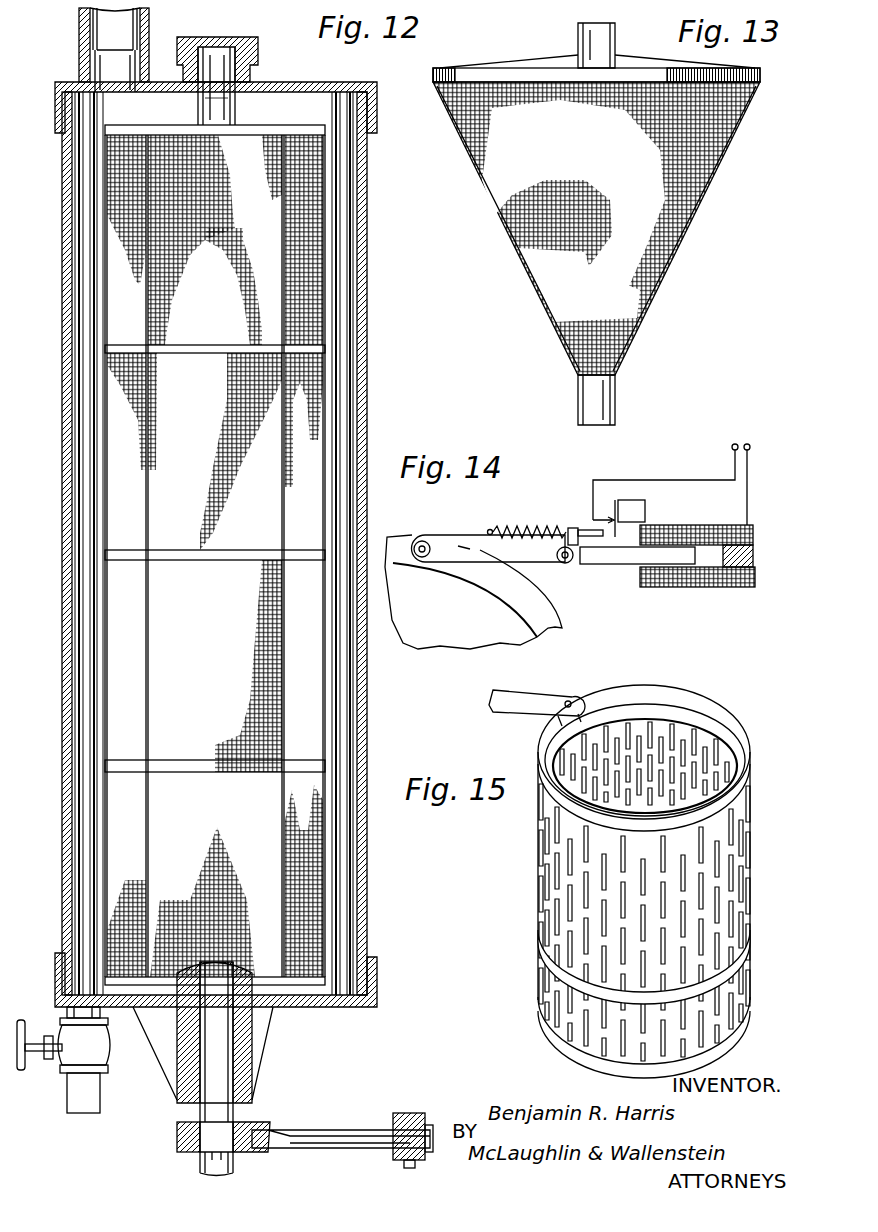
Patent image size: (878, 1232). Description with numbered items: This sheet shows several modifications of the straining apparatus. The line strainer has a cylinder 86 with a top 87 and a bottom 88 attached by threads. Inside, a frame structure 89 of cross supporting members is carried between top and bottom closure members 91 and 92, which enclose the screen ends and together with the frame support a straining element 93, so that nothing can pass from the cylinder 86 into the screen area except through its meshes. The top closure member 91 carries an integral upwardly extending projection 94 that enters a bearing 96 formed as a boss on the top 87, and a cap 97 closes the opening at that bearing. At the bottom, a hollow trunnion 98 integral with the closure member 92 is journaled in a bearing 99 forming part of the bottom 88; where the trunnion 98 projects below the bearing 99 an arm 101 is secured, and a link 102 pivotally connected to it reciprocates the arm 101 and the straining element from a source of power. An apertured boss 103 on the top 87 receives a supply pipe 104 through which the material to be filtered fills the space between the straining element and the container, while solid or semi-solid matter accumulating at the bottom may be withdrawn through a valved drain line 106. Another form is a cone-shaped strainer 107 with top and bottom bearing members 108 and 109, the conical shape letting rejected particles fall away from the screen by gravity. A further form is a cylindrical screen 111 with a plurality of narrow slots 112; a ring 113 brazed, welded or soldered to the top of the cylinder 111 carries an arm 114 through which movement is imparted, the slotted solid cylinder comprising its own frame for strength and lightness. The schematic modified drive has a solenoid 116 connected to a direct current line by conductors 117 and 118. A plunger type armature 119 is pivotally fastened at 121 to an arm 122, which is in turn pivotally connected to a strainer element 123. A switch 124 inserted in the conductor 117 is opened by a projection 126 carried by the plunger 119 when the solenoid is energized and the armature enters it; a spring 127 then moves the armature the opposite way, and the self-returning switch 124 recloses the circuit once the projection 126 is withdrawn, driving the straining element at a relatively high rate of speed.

In FIG. 12, the cylinder 86 is at (367, 272).
In FIG. 12, the top 87 is at (377, 120).
In FIG. 12, the bottom 88 is at (377, 968).
In FIG. 12, the frame structure 89 is at (325, 350).
In FIG. 12, the top closure member 91 is at (300, 130).
In FIG. 12, the bottom closure member 92 is at (318, 985).
In FIG. 12, the straining element 93 is at (315, 170).
In FIG. 12, the upwardly extending projection 94 is at (228, 103).
In FIG. 12, the bearing 96 is at (250, 60).
In FIG. 12, the cap 97 is at (212, 47).
In FIG. 12, the hollow trunnion 98 is at (190, 1108).
In FIG. 12, the bearing 99 is at (243, 1062).
In FIG. 12, the arm 101 is at (335, 1105).
In FIG. 12, the link 102 is at (405, 1117).
In FIG. 12, the apertured boss 103 is at (79, 63).
In FIG. 12, the supply pipe 104 is at (79, 28).
In FIG. 12, the valved drain line 106 is at (90, 1052).
In FIG. 13, the strainer 107 is at (680, 222).
In FIG. 13, the top bearing member 108 is at (578, 38).
In FIG. 13, the bottom bearing member 109 is at (578, 397).
In FIG. 15, the cylindrical screen 111 is at (538, 848).
In FIG. 15, the narrow slots 112 is at (715, 895).
In FIG. 15, the ring 113 is at (725, 722).
In FIG. 15, the arm 114 is at (493, 706).
In FIG. 14, the solenoid 116 is at (750, 527).
In FIG. 14, the conductor 117 is at (685, 480).
In FIG. 14, the conductor 118 is at (752, 450).
In FIG. 14, the plunger type armature 119 is at (622, 562).
In FIG. 14, the pivot 121 is at (566, 564).
In FIG. 14, the arm 122 is at (462, 545).
In FIG. 14, the strainer element 123 is at (548, 635).
In FIG. 14, the switch 124 is at (645, 512).
In FIG. 14, the projection 126 is at (575, 527).
In FIG. 14, the spring 127 is at (535, 530).